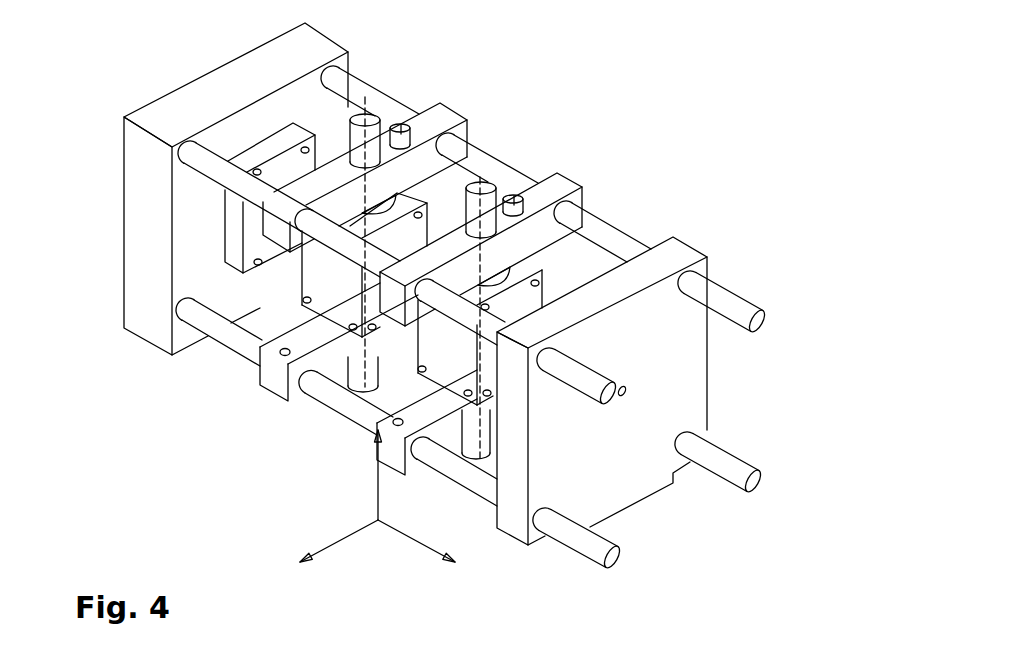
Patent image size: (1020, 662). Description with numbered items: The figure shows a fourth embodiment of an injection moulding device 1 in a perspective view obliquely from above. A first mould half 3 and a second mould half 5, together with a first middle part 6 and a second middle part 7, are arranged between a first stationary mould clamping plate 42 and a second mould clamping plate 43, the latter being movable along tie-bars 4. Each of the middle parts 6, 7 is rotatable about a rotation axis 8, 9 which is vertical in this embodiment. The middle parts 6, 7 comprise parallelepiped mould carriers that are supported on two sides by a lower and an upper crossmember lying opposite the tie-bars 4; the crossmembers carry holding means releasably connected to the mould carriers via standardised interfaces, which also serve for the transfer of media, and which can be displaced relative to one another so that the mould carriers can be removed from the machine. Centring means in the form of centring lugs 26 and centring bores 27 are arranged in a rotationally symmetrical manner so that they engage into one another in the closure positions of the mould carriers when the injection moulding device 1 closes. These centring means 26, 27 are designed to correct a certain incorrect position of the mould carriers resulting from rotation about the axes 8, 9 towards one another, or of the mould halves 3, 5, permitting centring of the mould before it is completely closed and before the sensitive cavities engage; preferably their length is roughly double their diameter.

The injection moulding device 1 is at (112, 413).
The first mould half 3 is at (331, 91).
The tie-bars 4 is at (618, 372).
The second mould half 5 is at (386, 513).
The first middle part 6 is at (262, 323).
The second middle part 7 is at (339, 404).
The rotation axis 8 is at (413, 211).
The rotation axis 9 is at (544, 289).
The centring lugs 26 is at (533, 312).
The centring bores 27 is at (301, 293).
The first stationary mould clamping plate 42 is at (302, 47).
The second mould clamping plate 43 is at (620, 365).